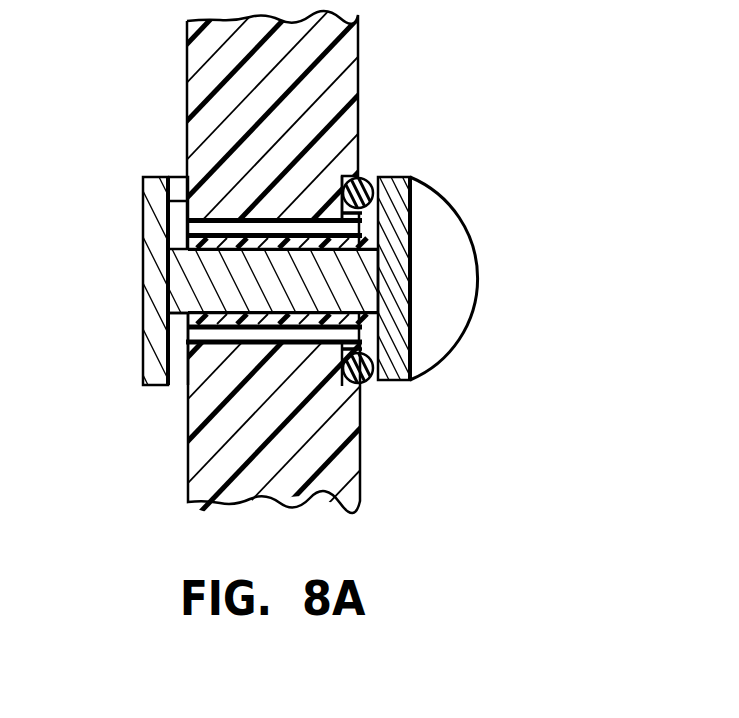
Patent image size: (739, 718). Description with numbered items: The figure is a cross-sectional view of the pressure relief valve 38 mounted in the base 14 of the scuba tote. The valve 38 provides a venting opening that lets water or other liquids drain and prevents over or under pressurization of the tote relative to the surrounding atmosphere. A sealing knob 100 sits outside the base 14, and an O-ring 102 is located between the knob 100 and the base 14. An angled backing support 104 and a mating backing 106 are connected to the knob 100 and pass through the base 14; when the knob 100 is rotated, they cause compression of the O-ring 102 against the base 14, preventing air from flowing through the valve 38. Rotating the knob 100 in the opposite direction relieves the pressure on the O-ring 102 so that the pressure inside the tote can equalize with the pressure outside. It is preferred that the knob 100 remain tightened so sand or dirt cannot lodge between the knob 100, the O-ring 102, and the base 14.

The base 14 is at (320, 329).
The pressure relief valve 38 is at (545, 99).
The sealing knob 100 is at (420, 278).
The O-ring 102 is at (407, 242).
The angled backing support 104 is at (145, 244).
The mating backing 106 is at (245, 281).